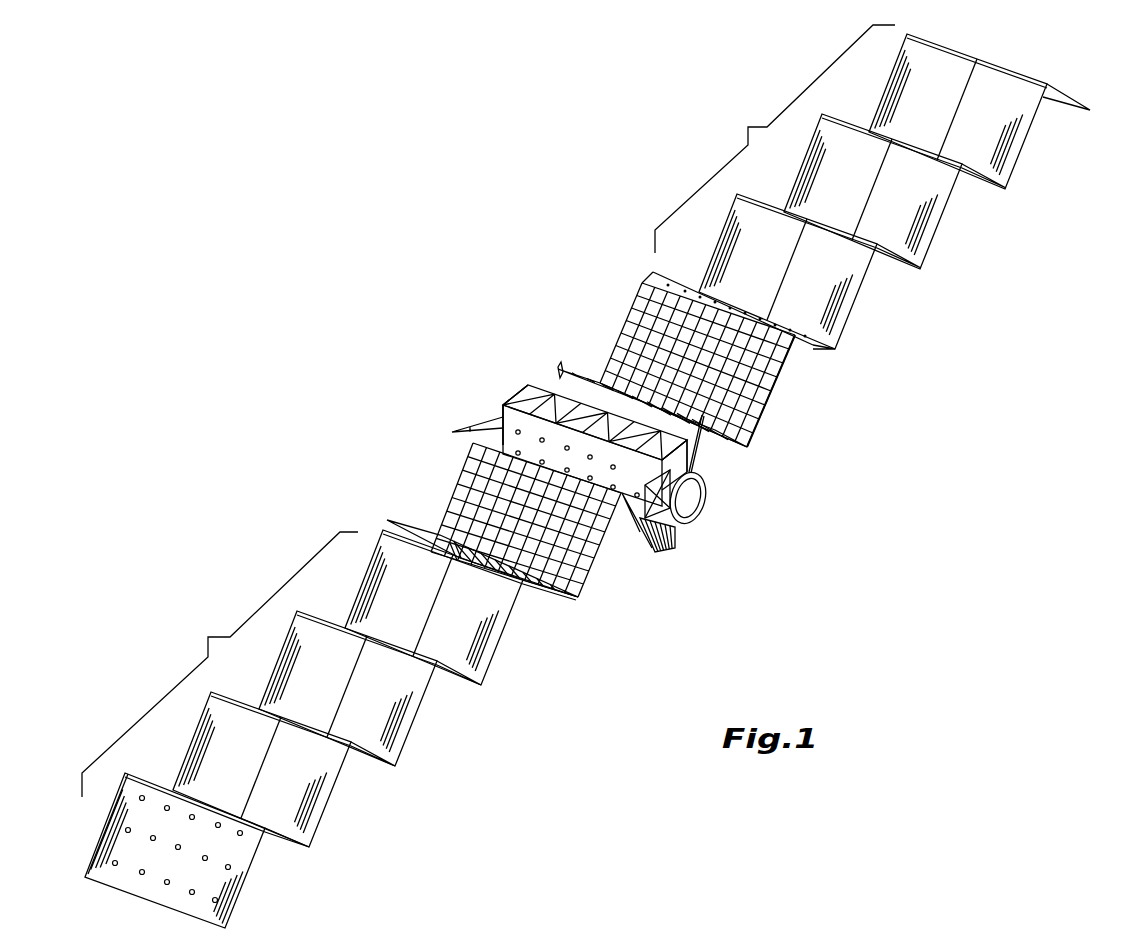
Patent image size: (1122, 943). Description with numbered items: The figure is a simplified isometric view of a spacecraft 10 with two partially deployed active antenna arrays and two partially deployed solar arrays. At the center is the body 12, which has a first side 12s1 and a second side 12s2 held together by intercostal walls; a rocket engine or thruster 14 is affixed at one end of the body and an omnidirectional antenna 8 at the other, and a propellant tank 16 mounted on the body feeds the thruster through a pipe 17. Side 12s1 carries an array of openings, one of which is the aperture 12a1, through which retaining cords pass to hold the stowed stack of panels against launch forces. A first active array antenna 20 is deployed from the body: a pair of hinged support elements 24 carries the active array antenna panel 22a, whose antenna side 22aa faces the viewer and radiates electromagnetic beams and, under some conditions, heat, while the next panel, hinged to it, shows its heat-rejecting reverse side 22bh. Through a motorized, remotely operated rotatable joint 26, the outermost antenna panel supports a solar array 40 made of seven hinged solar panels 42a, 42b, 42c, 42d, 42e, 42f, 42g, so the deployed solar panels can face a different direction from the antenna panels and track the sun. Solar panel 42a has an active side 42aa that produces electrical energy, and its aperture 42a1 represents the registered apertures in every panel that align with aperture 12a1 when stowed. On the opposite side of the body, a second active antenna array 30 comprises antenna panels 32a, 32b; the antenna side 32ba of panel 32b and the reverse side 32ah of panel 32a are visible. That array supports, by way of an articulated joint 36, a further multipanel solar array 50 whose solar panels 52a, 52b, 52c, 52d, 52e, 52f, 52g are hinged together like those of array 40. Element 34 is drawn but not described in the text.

The omnidirectional antenna 8 is at (462, 430).
The spacecraft 10 is at (817, 577).
The body 12 is at (582, 467).
The aperture 12a1 is at (514, 431).
The first side 12s1 is at (496, 422).
The second side 12s2 is at (505, 400).
The thruster 14 is at (702, 498).
The propellant tank 16 is at (622, 438).
The pipe 17 is at (665, 450).
The first active array antenna 20 is at (408, 460).
The active array antenna panel 22a is at (585, 580).
The antenna side 22aa is at (458, 490).
The reverse side 22bh is at (543, 588).
The support element 24 is at (633, 537).
The rotatable joint 26 is at (458, 557).
The second active antenna array 30 is at (572, 318).
The active antenna array panel 32a is at (737, 446).
The reverse side 32ah is at (727, 447).
The active antenna array panel 32b is at (757, 407).
The antenna side 32ba is at (645, 305).
The hinge 34 is at (556, 370).
The articulated joint 36 is at (714, 300).
The solar array 40 is at (210, 637).
The solar panel 42a is at (233, 905).
The aperture 42a1 is at (142, 792).
The active side 42aa is at (118, 810).
The solar panel 42b is at (292, 843).
The solar panel 42c is at (325, 832).
The solar panel 42d is at (372, 762).
The solar panel 42e is at (410, 745).
The solar panel 42f is at (453, 682).
The solar panel 42g is at (490, 671).
The multipanel solar array 50 is at (746, 123).
The solar panel 52a is at (1090, 111).
The solar panel 52b is at (1010, 183).
The solar panel 52c is at (985, 190).
The solar panel 52d is at (926, 258).
The solar panel 52e is at (904, 262).
The solar panel 52f is at (840, 340).
The solar panel 52g is at (822, 352).